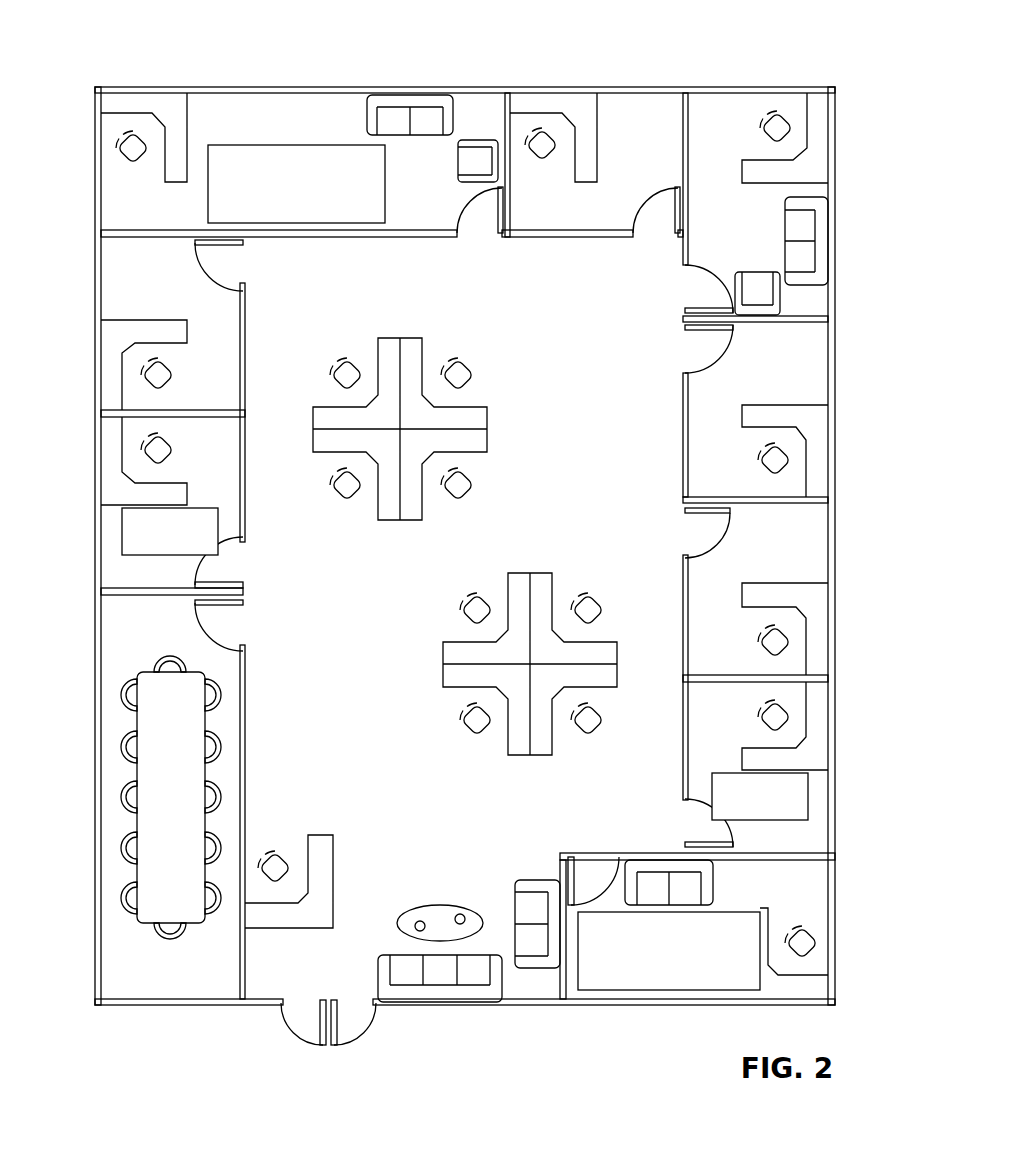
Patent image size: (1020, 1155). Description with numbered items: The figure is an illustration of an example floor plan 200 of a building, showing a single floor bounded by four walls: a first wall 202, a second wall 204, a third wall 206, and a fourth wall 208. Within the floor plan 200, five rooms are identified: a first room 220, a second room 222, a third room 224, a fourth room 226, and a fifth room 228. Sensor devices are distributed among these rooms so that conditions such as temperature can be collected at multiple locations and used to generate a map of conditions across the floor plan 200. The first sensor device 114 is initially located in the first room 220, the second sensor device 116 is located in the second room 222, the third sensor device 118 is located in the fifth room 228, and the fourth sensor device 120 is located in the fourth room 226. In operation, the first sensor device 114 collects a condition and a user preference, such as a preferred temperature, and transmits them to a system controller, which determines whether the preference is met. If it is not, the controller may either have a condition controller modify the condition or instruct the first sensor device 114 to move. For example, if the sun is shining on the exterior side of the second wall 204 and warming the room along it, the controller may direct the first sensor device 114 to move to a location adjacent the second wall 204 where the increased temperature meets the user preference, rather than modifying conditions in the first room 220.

The floor plan 200 is at (464, 522).
The first wall 202 is at (112, 87).
The second wall 204 is at (835, 113).
The third wall 206 is at (190, 1005).
The fourth wall 208 is at (93, 115).
The first room 220 is at (114, 216).
The second room 222 is at (774, 889).
The third room 224 is at (446, 314).
The fourth room 226 is at (701, 714).
The fifth room 228 is at (186, 451).
The first sensor device 114 is at (385, 167).
The second sensor device 116 is at (760, 980).
The third sensor device 118 is at (218, 522).
The fourth sensor device 120 is at (712, 788).